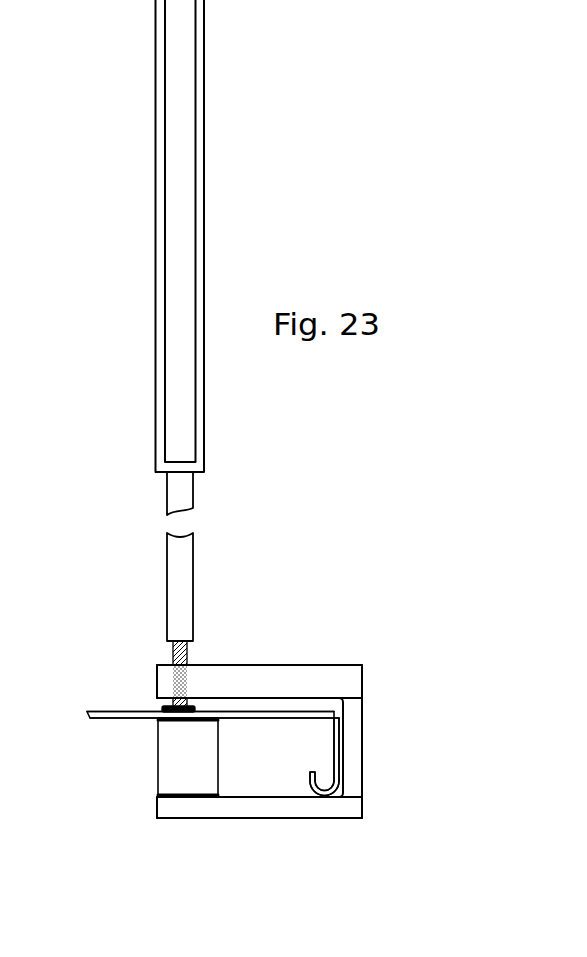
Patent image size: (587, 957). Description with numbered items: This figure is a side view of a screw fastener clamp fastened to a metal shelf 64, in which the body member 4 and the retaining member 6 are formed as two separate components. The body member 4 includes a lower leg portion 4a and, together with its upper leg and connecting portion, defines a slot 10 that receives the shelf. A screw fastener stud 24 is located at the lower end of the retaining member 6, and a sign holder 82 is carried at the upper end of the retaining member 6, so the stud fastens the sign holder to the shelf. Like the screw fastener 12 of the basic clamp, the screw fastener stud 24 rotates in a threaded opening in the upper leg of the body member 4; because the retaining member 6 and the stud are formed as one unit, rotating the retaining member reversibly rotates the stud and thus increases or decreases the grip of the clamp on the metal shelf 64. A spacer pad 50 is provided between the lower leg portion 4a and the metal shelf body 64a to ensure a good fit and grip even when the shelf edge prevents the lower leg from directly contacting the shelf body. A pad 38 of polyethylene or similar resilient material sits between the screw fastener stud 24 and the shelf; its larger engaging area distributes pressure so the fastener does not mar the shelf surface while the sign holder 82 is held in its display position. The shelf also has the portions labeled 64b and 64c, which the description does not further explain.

The sign holder 82 is at (207, 219).
The retaining member 6 is at (182, 497).
The screw fastener 12 is at (169, 651).
The screw fastener stud 24 is at (171, 664).
The pad 38 is at (162, 708).
The body member 4 is at (365, 707).
The slot 10 is at (325, 703).
The lower leg portion 4a is at (217, 810).
The metal shelf 64 is at (125, 724).
The metal shelf body 64a is at (238, 716).
The leg portion 64b is at (337, 745).
The hook portion 64c is at (317, 788).
The spacer pad 50 is at (177, 762).